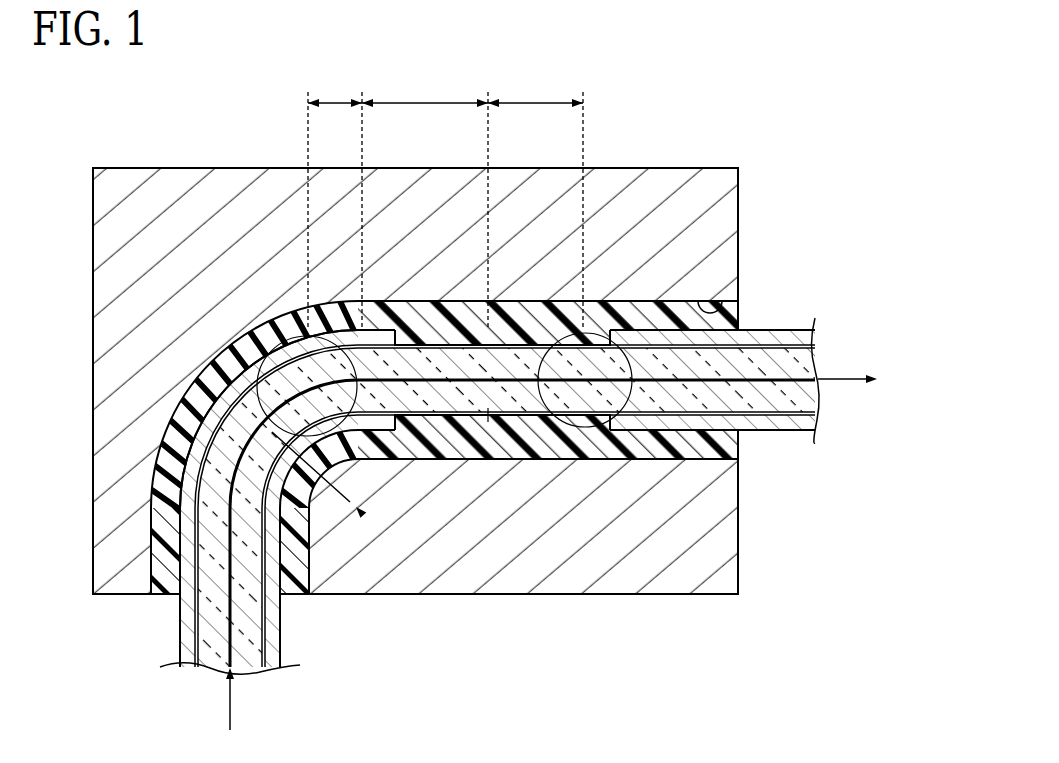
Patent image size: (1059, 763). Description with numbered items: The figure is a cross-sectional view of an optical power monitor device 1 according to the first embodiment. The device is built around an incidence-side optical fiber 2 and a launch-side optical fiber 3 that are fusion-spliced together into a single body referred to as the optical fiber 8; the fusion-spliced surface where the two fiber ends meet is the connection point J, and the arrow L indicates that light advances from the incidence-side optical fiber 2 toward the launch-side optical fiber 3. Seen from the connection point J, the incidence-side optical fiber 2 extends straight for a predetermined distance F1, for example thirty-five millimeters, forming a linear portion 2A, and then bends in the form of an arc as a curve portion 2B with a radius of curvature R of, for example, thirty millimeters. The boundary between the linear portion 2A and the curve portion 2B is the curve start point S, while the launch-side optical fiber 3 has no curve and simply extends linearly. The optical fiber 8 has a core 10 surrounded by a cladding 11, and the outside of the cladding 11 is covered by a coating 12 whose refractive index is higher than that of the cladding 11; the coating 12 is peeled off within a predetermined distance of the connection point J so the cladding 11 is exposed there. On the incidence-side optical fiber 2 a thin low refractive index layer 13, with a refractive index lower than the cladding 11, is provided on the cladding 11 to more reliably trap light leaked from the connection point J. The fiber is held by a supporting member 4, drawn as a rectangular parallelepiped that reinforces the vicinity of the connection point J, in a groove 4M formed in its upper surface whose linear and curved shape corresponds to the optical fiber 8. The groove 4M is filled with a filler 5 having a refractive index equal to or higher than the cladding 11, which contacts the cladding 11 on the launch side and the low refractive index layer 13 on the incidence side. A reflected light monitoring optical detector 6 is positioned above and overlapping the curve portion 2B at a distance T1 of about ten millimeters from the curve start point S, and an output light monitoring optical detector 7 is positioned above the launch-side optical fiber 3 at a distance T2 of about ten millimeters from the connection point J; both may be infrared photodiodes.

The optical power monitor device 1 is at (283, 158).
The incidence-side optical fiber 2 is at (398, 452).
The linear portion 2A is at (427, 320).
The curve portion 2B is at (232, 375).
The launch-side optical fiber 3 is at (677, 428).
The supporting member 4 is at (677, 172).
The groove 4M is at (718, 313).
The filler 5 is at (647, 318).
The reflected light monitoring optical detector 6 is at (290, 357).
The output light monitoring optical detector 7 is at (578, 430).
The optical fiber 8 is at (527, 426).
The core 10 is at (781, 384).
The cladding 11 is at (818, 356).
The coating 12 is at (780, 333).
The low refractive index layer 13 is at (438, 420).
The connection point J is at (489, 426).
The radius of curvature R is at (352, 515).
The curve start point S is at (364, 360).
The arrow indicating light advance direction L is at (844, 385).
The distance T1 is at (335, 200).
The predetermined distance F1 is at (425, 200).
The distance T2 is at (535, 200).